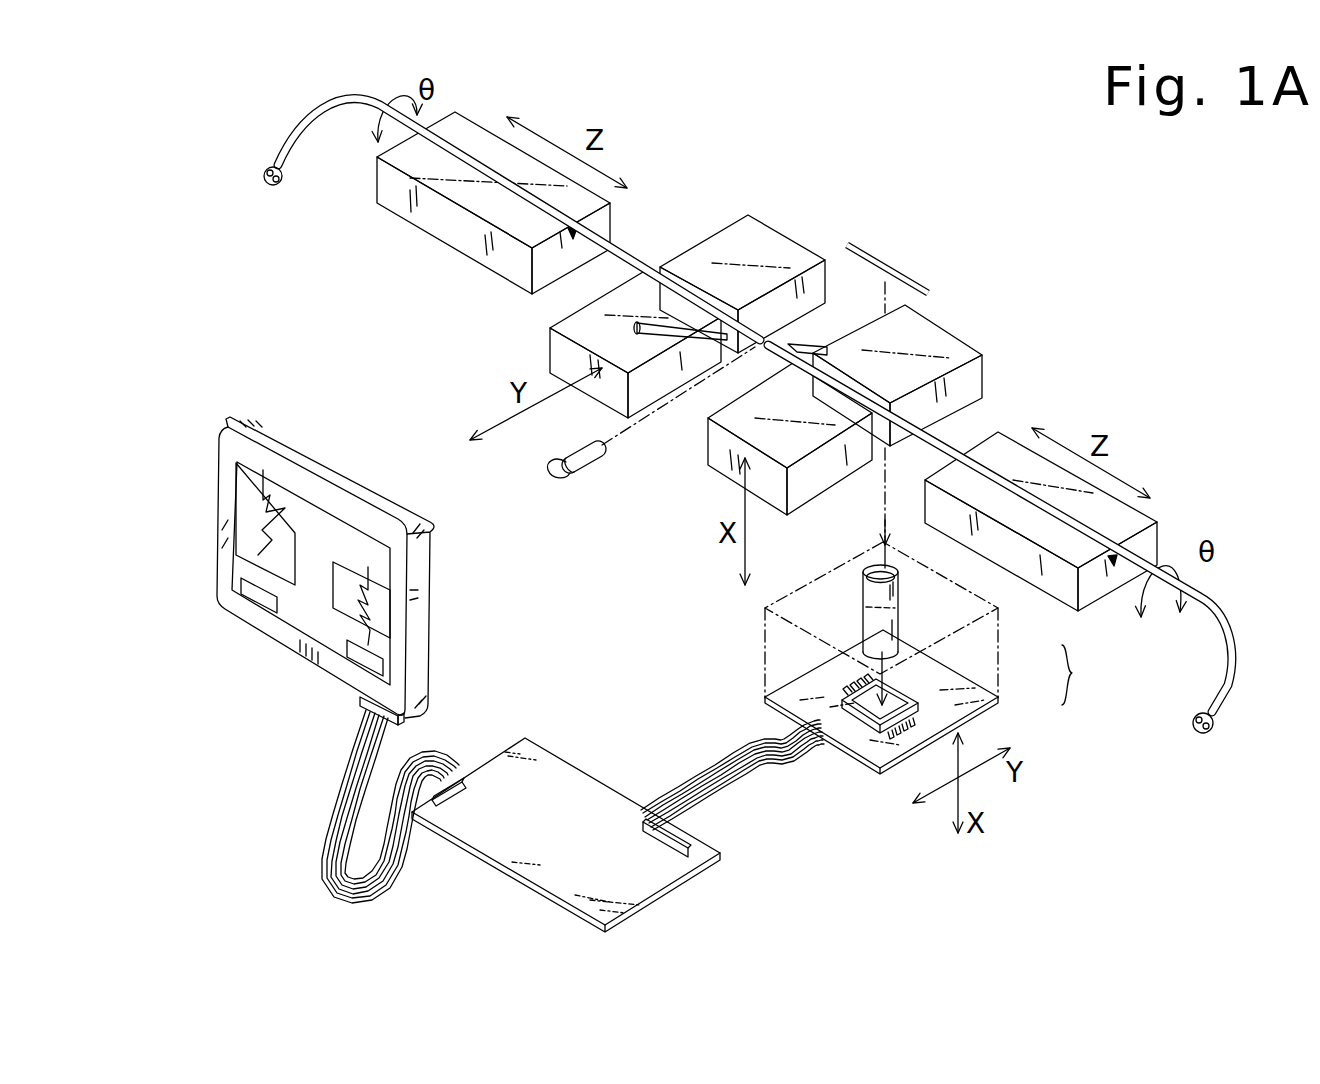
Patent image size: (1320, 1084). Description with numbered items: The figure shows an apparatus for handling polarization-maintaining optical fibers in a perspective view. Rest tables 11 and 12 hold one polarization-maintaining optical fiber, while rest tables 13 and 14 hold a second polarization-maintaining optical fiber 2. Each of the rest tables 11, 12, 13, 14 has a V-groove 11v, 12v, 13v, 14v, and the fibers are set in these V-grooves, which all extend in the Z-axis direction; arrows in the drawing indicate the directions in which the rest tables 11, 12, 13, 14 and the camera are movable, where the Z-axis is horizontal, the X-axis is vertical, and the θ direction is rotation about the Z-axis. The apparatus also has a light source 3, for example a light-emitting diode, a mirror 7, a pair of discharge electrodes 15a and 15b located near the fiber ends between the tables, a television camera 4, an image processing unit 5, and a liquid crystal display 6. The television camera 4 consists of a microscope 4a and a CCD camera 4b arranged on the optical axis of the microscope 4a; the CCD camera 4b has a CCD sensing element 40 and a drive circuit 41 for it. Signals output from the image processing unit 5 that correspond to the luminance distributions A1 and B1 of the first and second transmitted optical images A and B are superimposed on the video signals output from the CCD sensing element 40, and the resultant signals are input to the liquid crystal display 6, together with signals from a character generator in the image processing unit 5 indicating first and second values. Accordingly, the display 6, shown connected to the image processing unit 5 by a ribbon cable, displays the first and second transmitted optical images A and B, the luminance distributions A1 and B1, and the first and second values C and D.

The polarization-maintaining optical fiber 2 is at (943, 437).
The light source 3 is at (588, 468).
The television camera 4 is at (886, 658).
The microscope 4a is at (900, 621).
The CCD camera 4b is at (1087, 675).
The image processing unit 5 is at (550, 748).
The liquid crystal display 6 is at (316, 558).
The mirror 7 is at (632, 262).
The rest table 11 is at (942, 336).
The V-groove 11v is at (883, 425).
The rest table 12 is at (1020, 428).
The V-groove 12v is at (1112, 555).
The rest table 13 is at (775, 247).
The V-groove 13v is at (657, 263).
The rest table 14 is at (462, 120).
The V-groove 14v is at (569, 242).
The discharge electrode 15a is at (653, 335).
The discharge electrode 15b is at (792, 342).
The CCD sensing element 40 is at (900, 686).
The drive circuit 41 is at (996, 691).
The first transmitted optical image A is at (275, 523).
The luminance distribution A1 is at (253, 502).
The second transmitted optical image B is at (383, 580).
The luminance distribution B1 is at (367, 567).
The first value C is at (253, 597).
The second value D is at (352, 650).